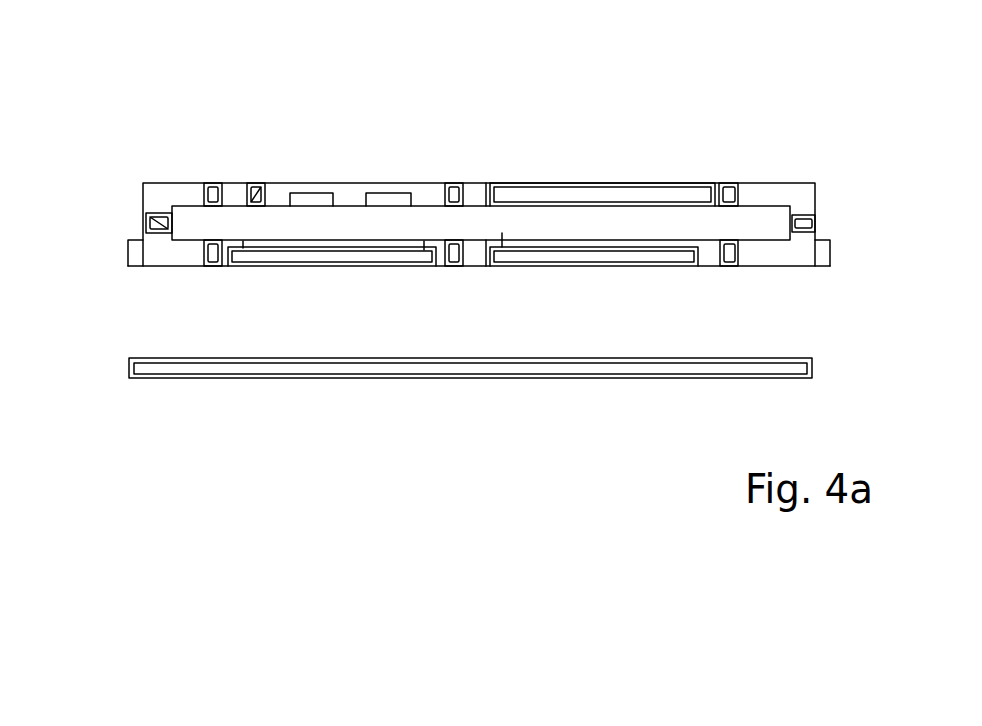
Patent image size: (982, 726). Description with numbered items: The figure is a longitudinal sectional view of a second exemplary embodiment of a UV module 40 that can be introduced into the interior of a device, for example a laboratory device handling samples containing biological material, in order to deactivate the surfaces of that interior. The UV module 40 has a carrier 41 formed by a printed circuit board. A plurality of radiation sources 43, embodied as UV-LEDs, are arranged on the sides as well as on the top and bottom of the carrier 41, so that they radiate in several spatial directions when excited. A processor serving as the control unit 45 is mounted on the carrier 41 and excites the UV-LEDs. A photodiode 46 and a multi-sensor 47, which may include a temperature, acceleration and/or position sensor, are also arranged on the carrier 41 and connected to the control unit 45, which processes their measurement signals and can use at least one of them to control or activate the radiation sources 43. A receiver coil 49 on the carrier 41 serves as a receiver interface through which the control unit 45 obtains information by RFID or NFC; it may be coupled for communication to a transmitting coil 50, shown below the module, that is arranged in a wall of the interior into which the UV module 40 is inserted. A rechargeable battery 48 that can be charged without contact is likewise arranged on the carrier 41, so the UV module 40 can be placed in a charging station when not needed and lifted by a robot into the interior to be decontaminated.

The UV module 40 is at (603, 63).
The carrier 41 is at (392, 230).
The radiation sources 43 is at (147, 213).
The control unit 45 is at (375, 193).
The photodiode 46 is at (256, 183).
The multi-sensor 47 is at (312, 193).
The battery 48 is at (617, 202).
The receiver coil 49 is at (620, 258).
The transmitting coil 50 is at (640, 363).